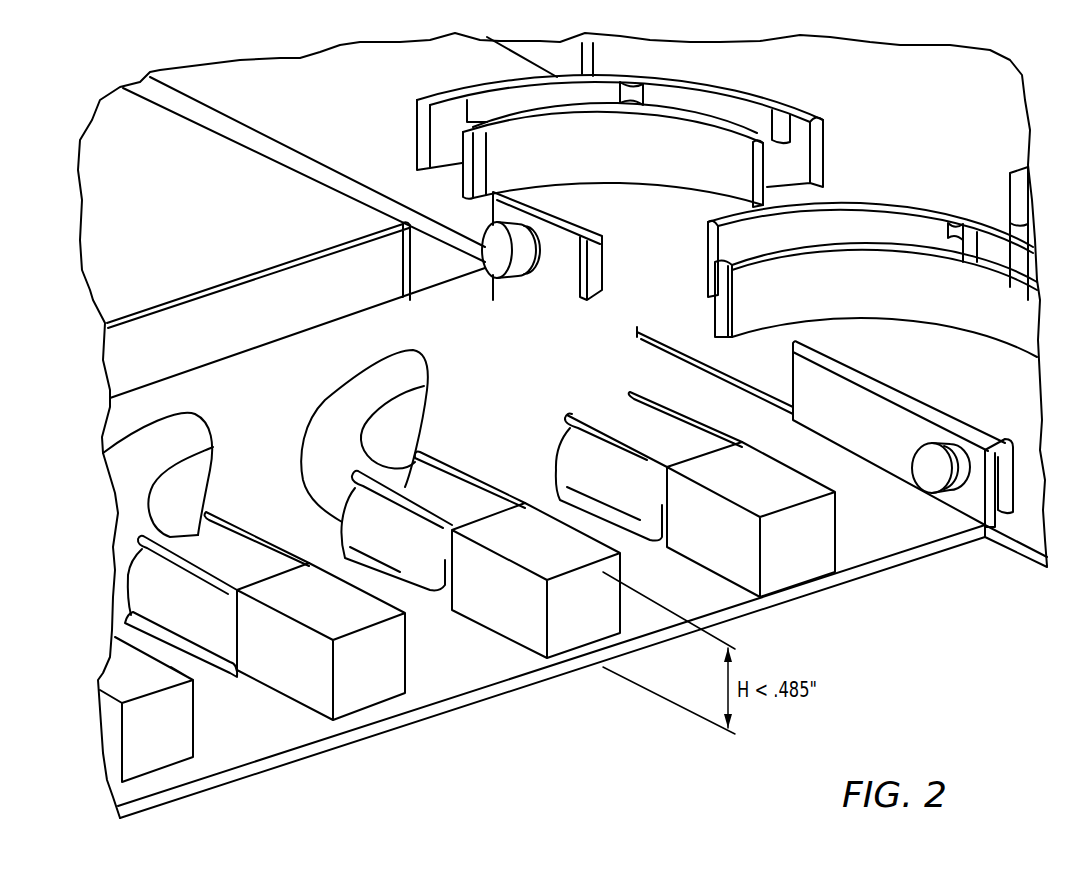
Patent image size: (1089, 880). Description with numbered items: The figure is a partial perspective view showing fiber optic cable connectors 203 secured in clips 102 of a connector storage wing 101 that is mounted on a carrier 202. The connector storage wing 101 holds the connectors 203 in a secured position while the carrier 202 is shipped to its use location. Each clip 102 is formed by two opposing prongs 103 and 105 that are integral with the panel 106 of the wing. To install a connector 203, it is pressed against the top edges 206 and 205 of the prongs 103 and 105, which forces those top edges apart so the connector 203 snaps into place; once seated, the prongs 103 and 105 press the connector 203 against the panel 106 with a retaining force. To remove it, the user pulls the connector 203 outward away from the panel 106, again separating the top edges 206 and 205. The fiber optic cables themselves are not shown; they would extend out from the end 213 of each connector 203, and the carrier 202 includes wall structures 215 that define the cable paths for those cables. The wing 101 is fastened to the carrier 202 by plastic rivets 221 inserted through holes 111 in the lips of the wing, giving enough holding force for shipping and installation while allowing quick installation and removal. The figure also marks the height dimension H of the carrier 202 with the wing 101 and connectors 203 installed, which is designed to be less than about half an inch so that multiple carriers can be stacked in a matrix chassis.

The connector storage wing 101 is at (892, 566).
The clip 102 is at (233, 523).
The prong 103 is at (410, 557).
The prong 105 is at (450, 462).
The panel 106 is at (485, 357).
The hole 111 is at (960, 460).
The carrier 202 is at (233, 150).
The fiber optic cable connector 203 is at (315, 415).
The top edge 205 is at (648, 397).
The top edge 206 is at (562, 443).
The end of connector 213 is at (408, 348).
The wall structure 215 is at (885, 200).
The plastic rivet 221 is at (503, 268).